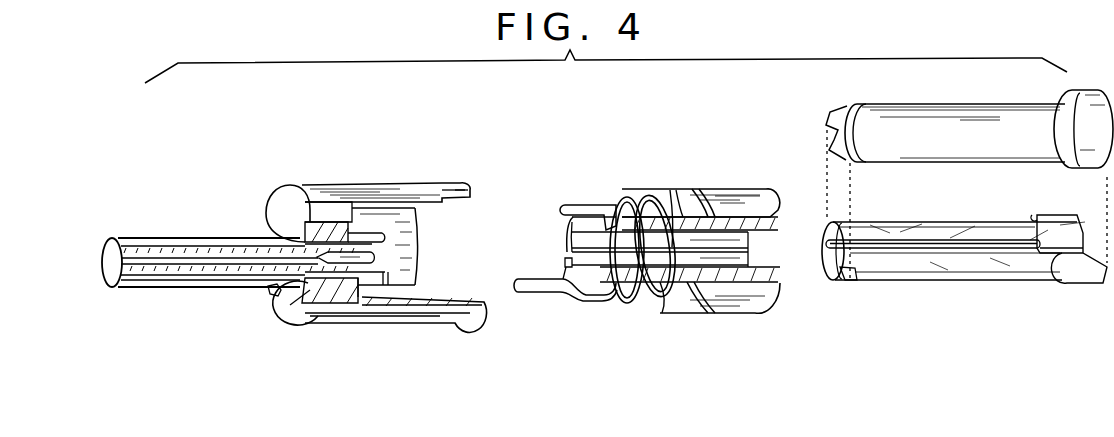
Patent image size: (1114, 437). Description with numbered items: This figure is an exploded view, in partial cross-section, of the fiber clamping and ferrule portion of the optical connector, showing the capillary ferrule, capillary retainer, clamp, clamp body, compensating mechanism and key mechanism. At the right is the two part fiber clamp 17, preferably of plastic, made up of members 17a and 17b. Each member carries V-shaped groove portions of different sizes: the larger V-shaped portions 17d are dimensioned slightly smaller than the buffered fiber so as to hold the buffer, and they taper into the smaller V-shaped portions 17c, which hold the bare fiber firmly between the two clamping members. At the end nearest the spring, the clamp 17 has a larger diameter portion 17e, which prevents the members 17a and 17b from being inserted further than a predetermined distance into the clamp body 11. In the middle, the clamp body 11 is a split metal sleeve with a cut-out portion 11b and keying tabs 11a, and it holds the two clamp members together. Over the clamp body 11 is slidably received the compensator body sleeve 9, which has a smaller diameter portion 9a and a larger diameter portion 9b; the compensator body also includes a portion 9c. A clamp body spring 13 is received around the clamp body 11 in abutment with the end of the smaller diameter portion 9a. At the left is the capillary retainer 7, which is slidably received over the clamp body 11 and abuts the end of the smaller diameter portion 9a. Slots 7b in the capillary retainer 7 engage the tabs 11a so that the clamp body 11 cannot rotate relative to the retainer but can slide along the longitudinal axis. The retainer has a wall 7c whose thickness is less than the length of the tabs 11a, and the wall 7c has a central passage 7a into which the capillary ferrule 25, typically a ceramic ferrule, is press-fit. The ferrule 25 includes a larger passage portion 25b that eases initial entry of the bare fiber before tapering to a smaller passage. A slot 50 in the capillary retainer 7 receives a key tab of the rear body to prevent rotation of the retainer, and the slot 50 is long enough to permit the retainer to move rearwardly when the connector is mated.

The capillary retainer 7 is at (417, 182).
The passage 7a is at (295, 238).
The slots 7b is at (328, 207).
The wall 7c is at (317, 292).
The compensator body sleeve 9 is at (650, 195).
The smaller diameter portion 9a is at (682, 202).
The larger diameter portion 9b is at (740, 195).
The contact sleeve ring 9c is at (695, 197).
The clamp body 11 is at (583, 293).
The keying tabs 11a is at (585, 203).
The cut-out portion 11b is at (567, 245).
The clamp body spring 13 is at (630, 302).
The fiber clamp 17 is at (943, 98).
The clamp member 17a is at (875, 113).
The clamp member 17b is at (957, 280).
The smaller V-shaped groove portions 17c is at (957, 240).
The larger V-shaped groove portions 17d is at (1057, 242).
The larger diameter portion 17e is at (1067, 86).
The capillary ferrule 25 is at (171, 238).
The larger passage portion 25b is at (373, 255).
The slot 50 is at (470, 192).